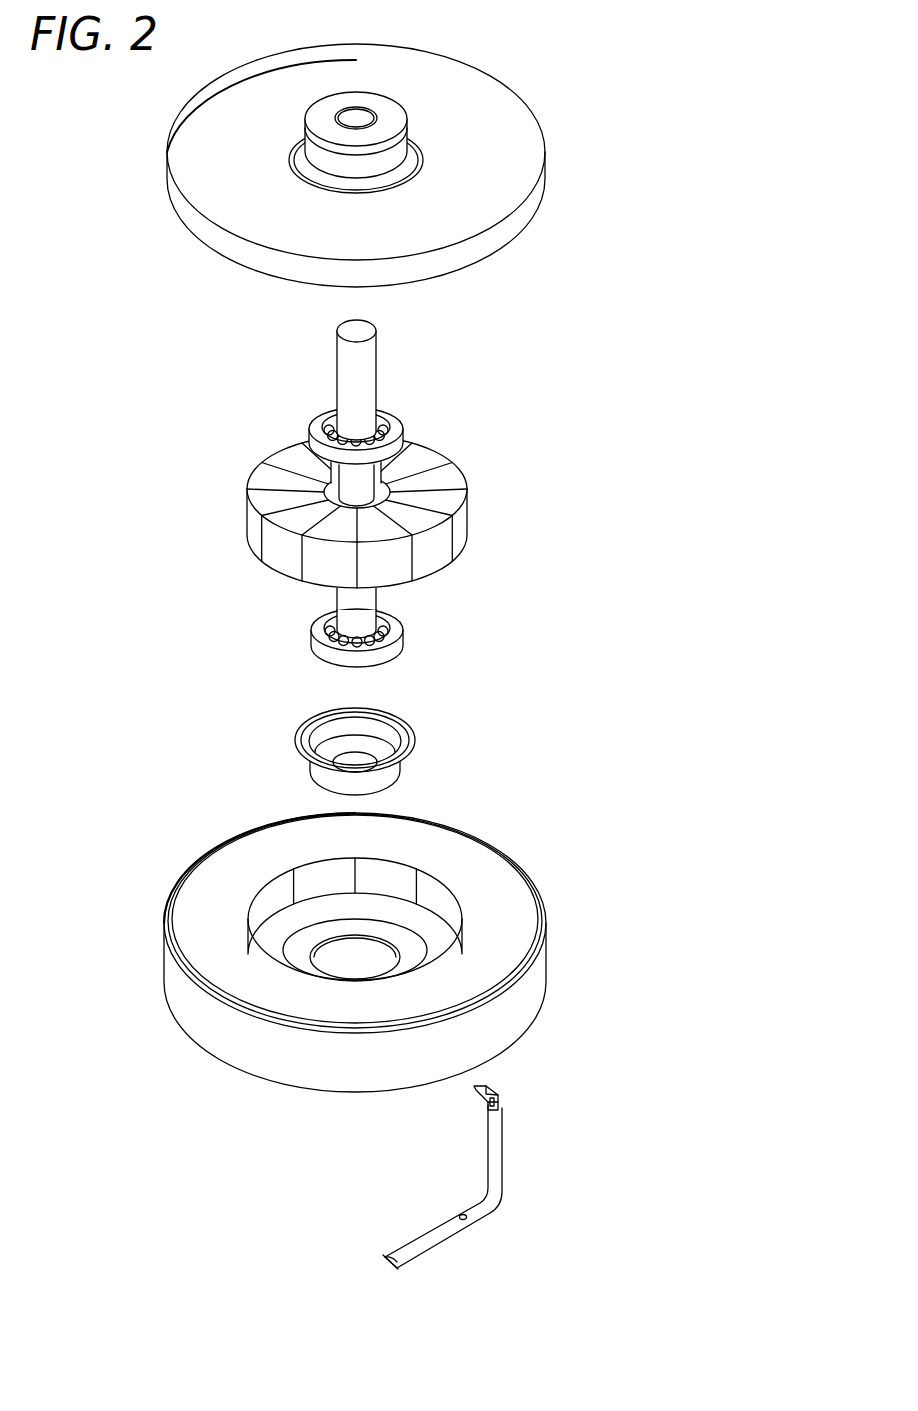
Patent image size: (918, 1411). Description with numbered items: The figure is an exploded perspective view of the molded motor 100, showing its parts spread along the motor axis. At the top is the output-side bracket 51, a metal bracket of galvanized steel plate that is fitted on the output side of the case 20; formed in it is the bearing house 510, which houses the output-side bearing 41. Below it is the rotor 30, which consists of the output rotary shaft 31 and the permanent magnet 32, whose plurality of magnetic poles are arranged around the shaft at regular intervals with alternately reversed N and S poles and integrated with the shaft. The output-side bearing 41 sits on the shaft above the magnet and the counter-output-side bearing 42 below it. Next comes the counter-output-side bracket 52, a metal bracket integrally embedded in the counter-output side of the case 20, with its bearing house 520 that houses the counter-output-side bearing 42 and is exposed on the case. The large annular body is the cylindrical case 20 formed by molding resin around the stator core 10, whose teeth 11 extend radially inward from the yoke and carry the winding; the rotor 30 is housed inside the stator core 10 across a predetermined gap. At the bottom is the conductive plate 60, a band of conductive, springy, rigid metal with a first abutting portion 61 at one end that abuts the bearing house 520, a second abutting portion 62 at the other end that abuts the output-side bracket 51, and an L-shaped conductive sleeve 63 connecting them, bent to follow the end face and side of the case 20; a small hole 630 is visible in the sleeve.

The molded motor 100 is at (615, 114).
The output-side bracket 51 is at (497, 240).
The bearing house 510 is at (437, 111).
The rotor 30 is at (470, 486).
The output rotary shaft 31 is at (366, 355).
The permanent magnet 32 is at (440, 552).
The output-side bearing 41 is at (408, 433).
The counter-output-side bearing 42 is at (408, 637).
The counter-output-side bracket 52 is at (405, 742).
The bearing house 520 is at (296, 751).
The case 20 is at (500, 895).
The stator core 10 is at (396, 892).
The teeth 11 is at (268, 895).
The conductive plate 60 is at (527, 1214).
The first abutting portion 61 is at (385, 1258).
The second abutting portion 62 is at (495, 1090).
The conductive sleeve 63 is at (455, 1226).
The through hole 630 is at (460, 1215).